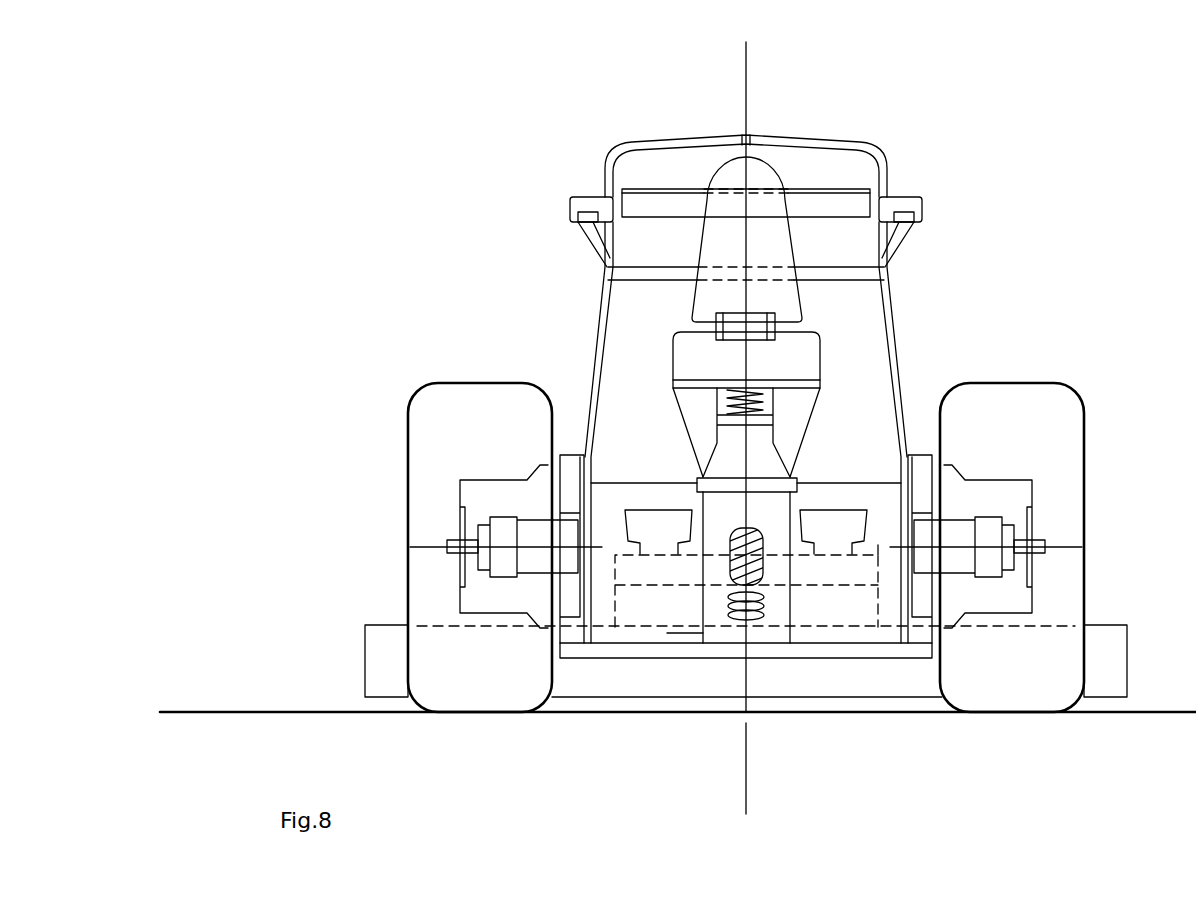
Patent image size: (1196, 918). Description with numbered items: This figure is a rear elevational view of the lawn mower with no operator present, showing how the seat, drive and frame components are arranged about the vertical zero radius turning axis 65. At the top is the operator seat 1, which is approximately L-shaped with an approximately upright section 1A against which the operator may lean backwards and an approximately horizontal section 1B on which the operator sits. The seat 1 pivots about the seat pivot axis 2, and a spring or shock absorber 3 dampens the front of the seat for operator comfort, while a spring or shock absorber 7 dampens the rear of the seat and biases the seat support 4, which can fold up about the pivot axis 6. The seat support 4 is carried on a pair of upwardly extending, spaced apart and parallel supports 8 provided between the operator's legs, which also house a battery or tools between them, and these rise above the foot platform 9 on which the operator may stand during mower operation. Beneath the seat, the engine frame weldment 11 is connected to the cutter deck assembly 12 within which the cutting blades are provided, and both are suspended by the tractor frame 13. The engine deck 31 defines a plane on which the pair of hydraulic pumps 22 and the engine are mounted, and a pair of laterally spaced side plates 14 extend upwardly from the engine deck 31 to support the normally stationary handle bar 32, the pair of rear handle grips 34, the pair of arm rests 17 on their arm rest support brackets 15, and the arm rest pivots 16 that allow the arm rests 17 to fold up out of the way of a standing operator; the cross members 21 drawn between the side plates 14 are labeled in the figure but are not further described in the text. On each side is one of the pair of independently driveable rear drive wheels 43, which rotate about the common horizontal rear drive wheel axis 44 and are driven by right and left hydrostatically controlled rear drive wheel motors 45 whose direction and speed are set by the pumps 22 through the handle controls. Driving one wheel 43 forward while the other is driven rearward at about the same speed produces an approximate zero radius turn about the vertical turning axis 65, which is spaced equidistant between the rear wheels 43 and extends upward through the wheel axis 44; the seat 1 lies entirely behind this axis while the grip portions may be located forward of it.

The operator seat 1 is at (795, 353).
The upright section 1A is at (790, 297).
The horizontal section 1B is at (817, 367).
The seat pivot axis 2 is at (716, 325).
The spring or shock absorber 3 is at (760, 398).
The seat support 4 is at (755, 461).
The pivot axis 6 is at (697, 482).
The spring or shock absorber 7 is at (753, 620).
The upwardly extending supports 8 is at (700, 597).
The foot platform 9 is at (667, 633).
The engine frame weldment 11 is at (617, 596).
The cutter deck assembly 12 is at (378, 662).
The tractor frame 13 is at (573, 497).
The side plates 14 is at (596, 384).
The arm rest support bracket 15 is at (592, 235).
The arm rest pivot 16 is at (578, 214).
The arm rest 17 is at (582, 203).
The cross bar 21 is at (637, 275).
The hydraulic pump 22 is at (665, 515).
The engine deck 31 is at (877, 545).
The handle bar 32 is at (750, 137).
The rear handle grips 34 is at (651, 145).
The rear drive wheel 43 is at (427, 579).
The rear drive wheel axis 44 is at (433, 547).
The rear drive wheel motor 45 is at (502, 525).
The zero radius turning axis 65 is at (742, 102).